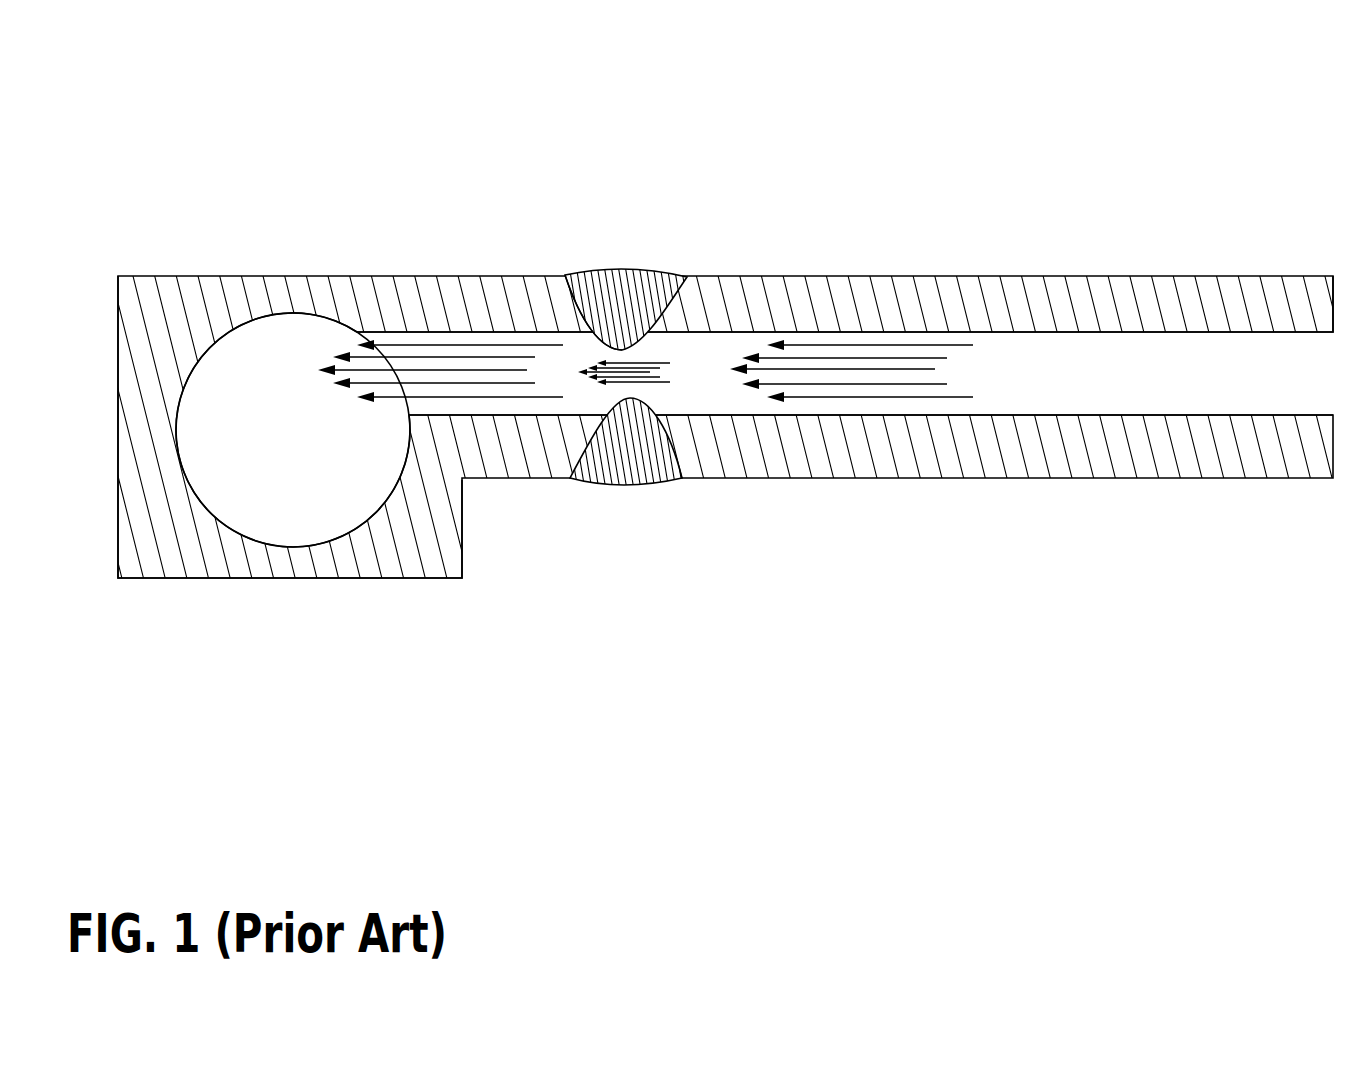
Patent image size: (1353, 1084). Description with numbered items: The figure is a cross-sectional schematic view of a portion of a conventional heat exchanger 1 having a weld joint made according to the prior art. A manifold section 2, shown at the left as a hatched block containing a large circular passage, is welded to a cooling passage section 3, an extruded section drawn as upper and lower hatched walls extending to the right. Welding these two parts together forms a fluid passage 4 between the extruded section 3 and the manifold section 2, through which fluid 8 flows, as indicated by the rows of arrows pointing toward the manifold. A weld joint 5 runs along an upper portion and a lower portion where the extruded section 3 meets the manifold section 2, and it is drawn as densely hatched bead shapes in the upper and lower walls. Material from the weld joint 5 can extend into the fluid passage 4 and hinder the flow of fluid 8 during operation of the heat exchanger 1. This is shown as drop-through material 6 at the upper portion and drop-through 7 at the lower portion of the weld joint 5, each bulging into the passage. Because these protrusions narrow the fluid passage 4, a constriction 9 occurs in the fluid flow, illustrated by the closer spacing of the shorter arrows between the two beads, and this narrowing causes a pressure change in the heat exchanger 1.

The heat exchanger 1 is at (1227, 140).
The manifold section 2 is at (353, 275).
The cooling passage section 3 is at (847, 277).
The fluid passage 4 is at (1122, 383).
The weld joint 5 is at (633, 269).
The drop-through material 6 is at (622, 348).
The drop-through 7 is at (630, 398).
The fluid 8 is at (857, 397).
The constriction 9 is at (662, 383).